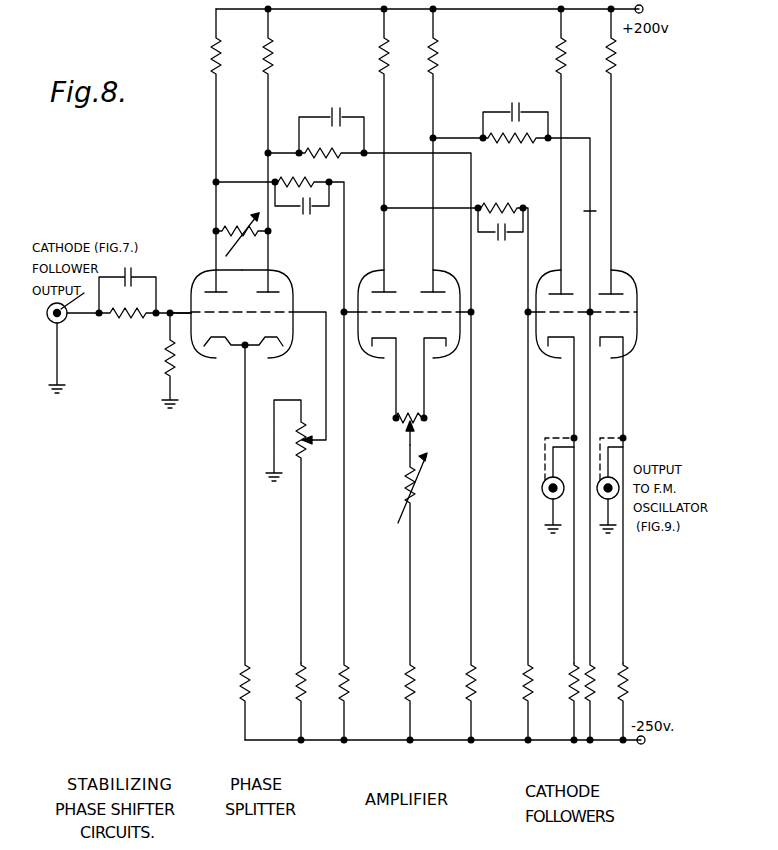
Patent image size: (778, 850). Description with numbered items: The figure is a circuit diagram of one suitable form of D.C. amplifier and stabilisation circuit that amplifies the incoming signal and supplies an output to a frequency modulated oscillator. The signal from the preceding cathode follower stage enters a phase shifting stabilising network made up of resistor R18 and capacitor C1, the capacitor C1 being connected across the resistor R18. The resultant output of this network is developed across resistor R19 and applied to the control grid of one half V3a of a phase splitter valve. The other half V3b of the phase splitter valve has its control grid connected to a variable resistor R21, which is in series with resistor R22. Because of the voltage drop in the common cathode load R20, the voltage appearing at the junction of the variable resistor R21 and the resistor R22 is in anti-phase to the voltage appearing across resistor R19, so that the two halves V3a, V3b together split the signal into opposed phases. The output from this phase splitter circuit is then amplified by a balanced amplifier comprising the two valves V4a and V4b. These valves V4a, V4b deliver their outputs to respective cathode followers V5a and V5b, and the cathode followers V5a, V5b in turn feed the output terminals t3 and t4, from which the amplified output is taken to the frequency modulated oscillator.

The capacitor C1 is at (127, 290).
The resistor R18 is at (129, 329).
The resistor R19 is at (185, 360).
The cathode load R20 is at (230, 542).
The variable resistor R21 is at (301, 531).
The resistor R22 is at (319, 701).
The phase splitter valve half V3a is at (206, 302).
The phase splitter valve half V3b is at (279, 305).
The valve V4a is at (374, 333).
The valve V4b is at (445, 333).
The cathode follower V5a is at (554, 455).
The cathode follower V5b is at (624, 455).
The output terminal t3 is at (553, 485).
The output terminal t4 is at (605, 485).